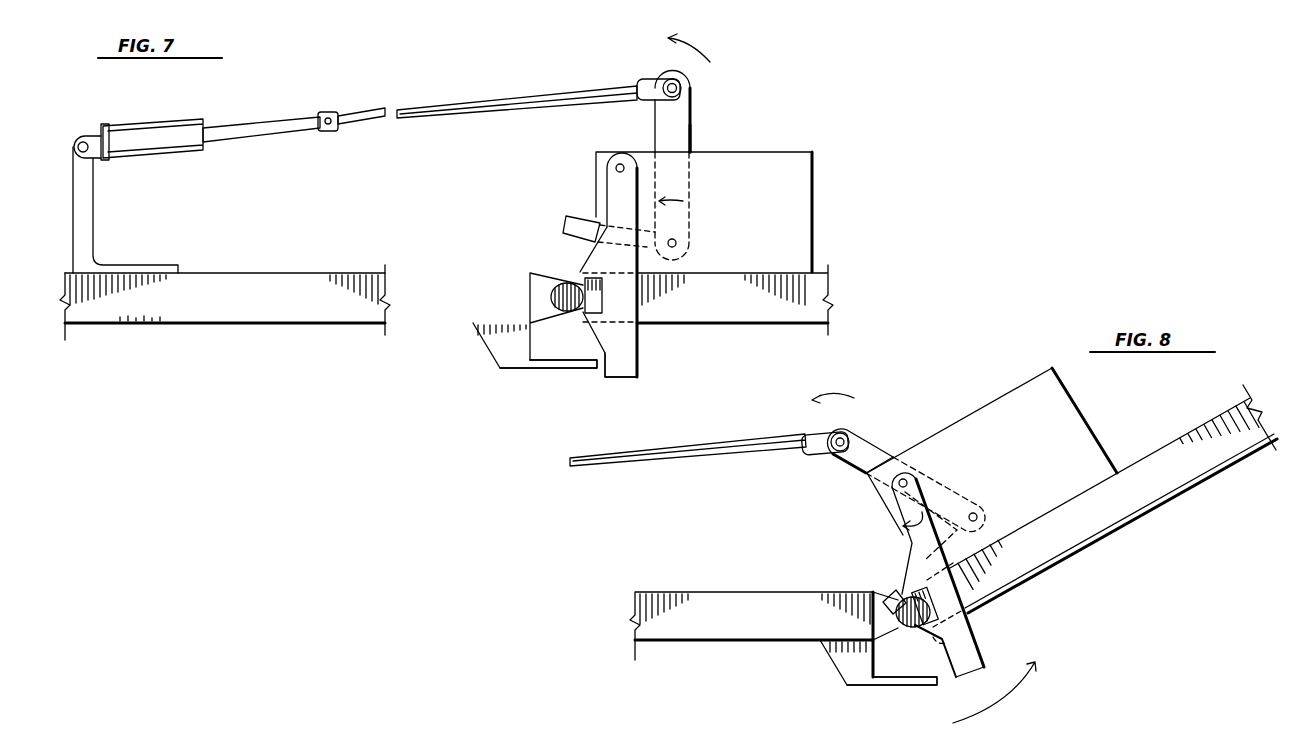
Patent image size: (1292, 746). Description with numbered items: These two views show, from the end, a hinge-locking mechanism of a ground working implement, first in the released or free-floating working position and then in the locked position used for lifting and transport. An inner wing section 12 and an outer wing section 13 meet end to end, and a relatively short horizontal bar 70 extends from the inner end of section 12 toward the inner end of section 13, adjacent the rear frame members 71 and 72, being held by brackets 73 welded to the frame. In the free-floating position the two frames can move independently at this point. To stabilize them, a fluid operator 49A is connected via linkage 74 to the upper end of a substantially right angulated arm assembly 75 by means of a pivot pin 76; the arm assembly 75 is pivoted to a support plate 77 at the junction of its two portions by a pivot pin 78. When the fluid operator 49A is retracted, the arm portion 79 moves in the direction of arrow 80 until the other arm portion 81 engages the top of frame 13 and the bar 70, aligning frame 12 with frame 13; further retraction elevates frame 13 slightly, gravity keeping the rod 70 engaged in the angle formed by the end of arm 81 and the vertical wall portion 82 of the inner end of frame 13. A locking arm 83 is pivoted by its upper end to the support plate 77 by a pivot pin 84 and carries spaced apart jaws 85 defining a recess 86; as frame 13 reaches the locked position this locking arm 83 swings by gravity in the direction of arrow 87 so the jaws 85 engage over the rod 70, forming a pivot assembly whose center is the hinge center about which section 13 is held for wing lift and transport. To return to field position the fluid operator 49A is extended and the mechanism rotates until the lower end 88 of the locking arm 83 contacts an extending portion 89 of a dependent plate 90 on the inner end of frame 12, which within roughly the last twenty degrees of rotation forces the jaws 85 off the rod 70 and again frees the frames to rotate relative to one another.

In FIG. 7, the inner wing section 12 is at (734, 314).
In FIG. 8, the inner wing section 12 is at (1200, 475).
In FIG. 7, the outer wing section 13 is at (228, 318).
In FIG. 8, the outer wing section 13 is at (689, 642).
In FIG. 7, the fluid operator 49A is at (156, 176).
In FIG. 7, the horizontal bar 70 is at (570, 282).
In FIG. 8, the horizontal bar 70 is at (894, 614).
In FIG. 7, the rear frame member 71 is at (360, 320).
In FIG. 8, the rear frame member 71 is at (769, 642).
In FIG. 7, the rear frame member 72 is at (804, 315).
In FIG. 8, the rear frame member 72 is at (1106, 525).
In FIG. 7, the bracket 73 is at (534, 310).
In FIG. 8, the bracket 73 is at (884, 632).
In FIG. 7, the linkage 74 is at (440, 118).
In FIG. 8, the linkage 74 is at (675, 458).
In FIG. 7, the arm assembly 75 is at (687, 136).
In FIG. 8, the arm assembly 75 is at (887, 456).
In FIG. 7, the pivot pin 76 is at (685, 72).
In FIG. 8, the pivot pin 76 is at (848, 430).
In FIG. 7, the support plate 77 is at (797, 162).
In FIG. 8, the support plate 77 is at (1081, 421).
In FIG. 7, the pivot pin 78 is at (679, 244).
In FIG. 8, the pivot pin 78 is at (982, 516).
In FIG. 7, the arm portion 79 is at (683, 100).
In FIG. 8, the arm portion 79 is at (842, 458).
In FIG. 7, the arrow 80 is at (710, 62).
In FIG. 8, the arrow 80 is at (854, 398).
In FIG. 7, the arm portion 81 is at (567, 213).
In FIG. 8, the arm portion 81 is at (892, 594).
In FIG. 7, the vertical wall portion 82 is at (571, 313).
In FIG. 8, the vertical wall portion 82 is at (936, 636).
In FIG. 7, the locking arm 83 is at (640, 332).
In FIG. 7, the pivot pin 84 is at (628, 162).
In FIG. 7, the jaws 85 is at (593, 275).
In FIG. 8, the jaws 85 is at (906, 578).
In FIG. 7, the recess 86 is at (602, 292).
In FIG. 8, the recess 86 is at (934, 614).
In FIG. 8, the arrow 87 is at (892, 527).
In FIG. 7, the lower end 88 is at (634, 376).
In FIG. 7, the extending portion 89 is at (591, 368).
In FIG. 8, the extending portion 89 is at (940, 684).
In FIG. 7, the dependent plate 90 is at (493, 357).
In FIG. 8, the dependent plate 90 is at (840, 676).